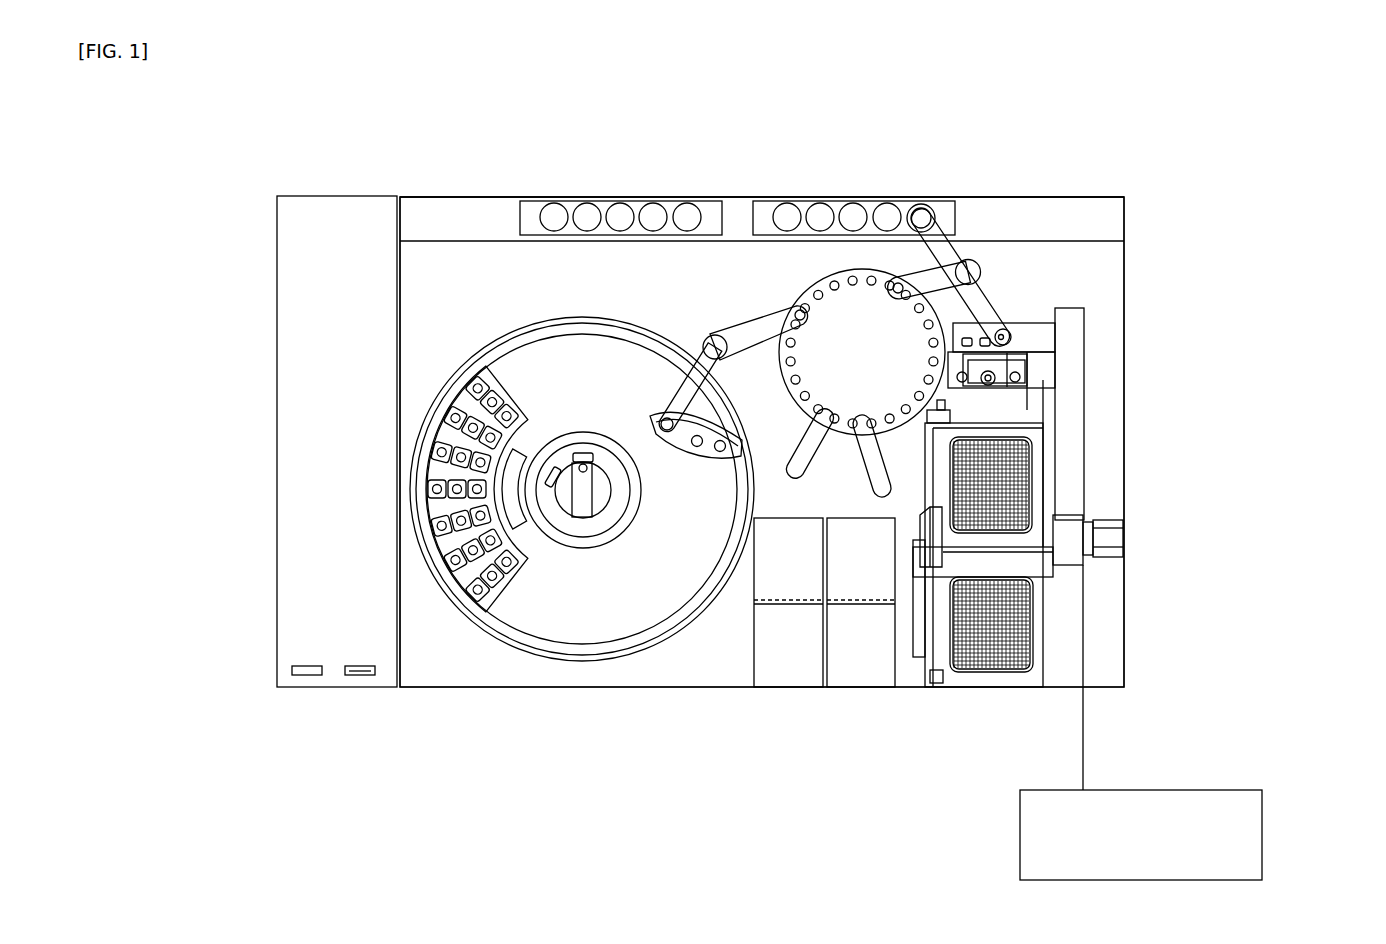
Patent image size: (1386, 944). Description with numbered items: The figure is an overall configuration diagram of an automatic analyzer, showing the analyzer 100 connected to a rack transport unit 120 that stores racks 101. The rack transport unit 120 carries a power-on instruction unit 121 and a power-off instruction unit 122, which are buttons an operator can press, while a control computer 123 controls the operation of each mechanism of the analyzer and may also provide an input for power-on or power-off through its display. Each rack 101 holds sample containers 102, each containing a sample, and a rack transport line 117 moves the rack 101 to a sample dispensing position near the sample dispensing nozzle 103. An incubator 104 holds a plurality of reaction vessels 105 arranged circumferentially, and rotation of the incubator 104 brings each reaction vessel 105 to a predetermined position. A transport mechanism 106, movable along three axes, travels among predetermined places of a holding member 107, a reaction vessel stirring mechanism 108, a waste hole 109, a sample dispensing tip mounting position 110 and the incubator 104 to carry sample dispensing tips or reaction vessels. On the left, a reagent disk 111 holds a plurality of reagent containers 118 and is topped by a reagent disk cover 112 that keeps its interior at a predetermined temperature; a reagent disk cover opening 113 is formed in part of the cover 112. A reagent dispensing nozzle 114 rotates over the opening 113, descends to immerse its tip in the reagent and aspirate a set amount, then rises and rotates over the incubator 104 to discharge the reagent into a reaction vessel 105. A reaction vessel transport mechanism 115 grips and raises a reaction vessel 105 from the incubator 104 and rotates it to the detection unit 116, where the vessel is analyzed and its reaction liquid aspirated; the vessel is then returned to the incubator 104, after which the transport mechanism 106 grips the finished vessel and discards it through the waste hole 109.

The analyzer 100 is at (487, 279).
The rack 101 is at (762, 396).
The sample container 102 is at (737, 179).
The sample dispensing nozzle 103 is at (990, 220).
The incubator 104 is at (880, 364).
The reaction vessel 105 is at (861, 272).
The transport mechanism 106 is at (1134, 486).
The holding member 107 is at (1058, 533).
The reaction vessel stirring mechanism 108 is at (1088, 406).
The waste hole 109 is at (1077, 283).
The sample dispensing tip mounting position 110 is at (1087, 443).
The reagent disk 111 is at (582, 464).
The reagent disk cover 112 is at (550, 557).
The reagent disk cover opening 113 is at (696, 474).
The reagent dispensing nozzle 114 is at (733, 351).
The reaction vessel transport mechanism 115 is at (838, 464).
The detection unit 116 is at (824, 650).
The rack transport line 117 is at (728, 186).
The reagent container 118 is at (468, 460).
The rack transport unit 120 is at (302, 401).
The power-on instruction unit 121 is at (297, 714).
The power-off instruction unit 122 is at (355, 714).
The control computer 123 is at (1190, 783).